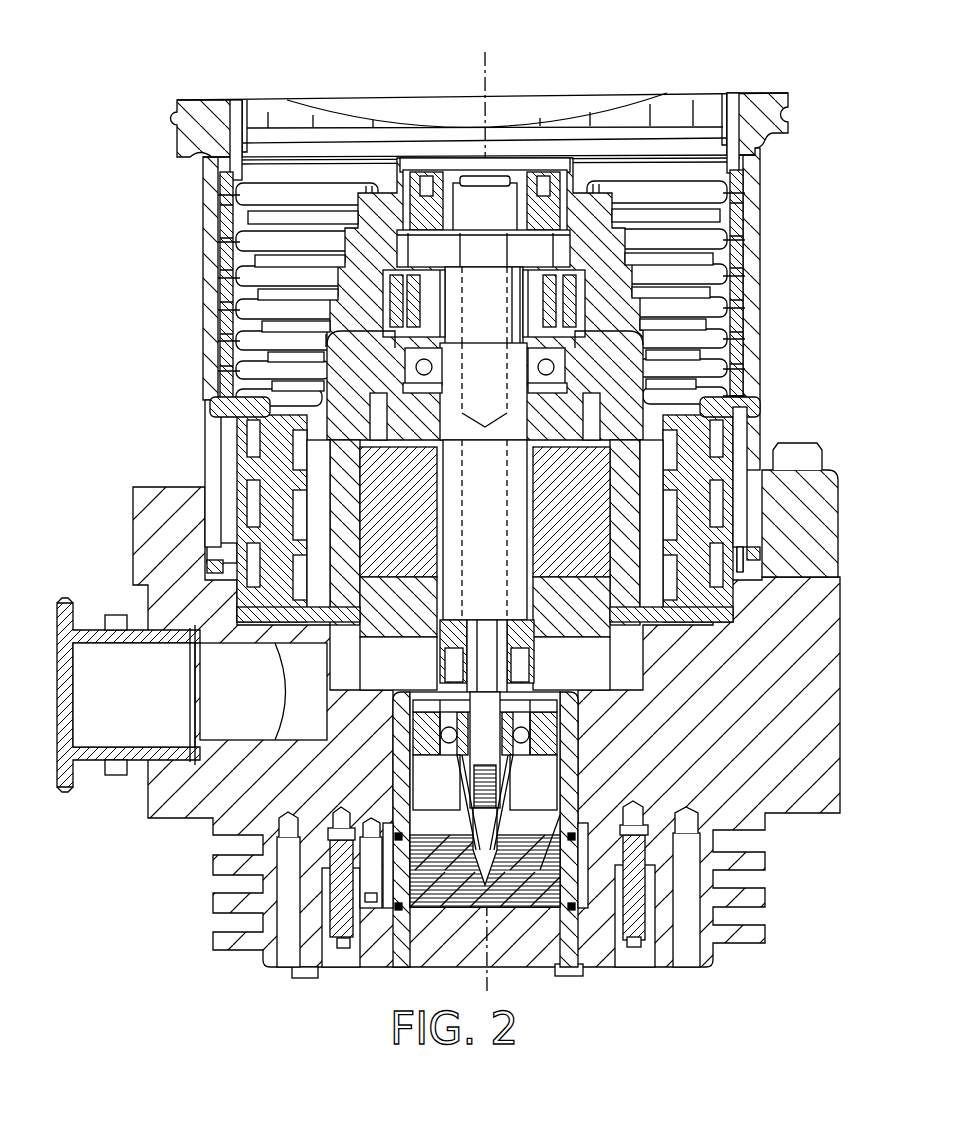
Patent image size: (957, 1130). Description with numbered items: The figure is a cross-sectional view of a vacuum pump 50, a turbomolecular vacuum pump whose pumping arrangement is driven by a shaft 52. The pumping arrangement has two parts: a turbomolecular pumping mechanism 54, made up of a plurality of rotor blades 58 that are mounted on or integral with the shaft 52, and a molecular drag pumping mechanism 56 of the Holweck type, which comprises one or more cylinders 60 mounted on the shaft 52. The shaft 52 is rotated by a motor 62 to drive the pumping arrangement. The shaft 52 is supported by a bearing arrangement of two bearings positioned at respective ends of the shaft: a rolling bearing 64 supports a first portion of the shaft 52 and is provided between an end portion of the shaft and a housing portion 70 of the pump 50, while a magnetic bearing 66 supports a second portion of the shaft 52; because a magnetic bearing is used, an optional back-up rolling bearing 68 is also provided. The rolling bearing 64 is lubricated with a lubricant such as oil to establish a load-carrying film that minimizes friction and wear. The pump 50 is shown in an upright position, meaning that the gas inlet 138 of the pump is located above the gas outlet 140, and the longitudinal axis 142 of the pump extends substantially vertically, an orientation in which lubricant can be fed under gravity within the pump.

The vacuum pump 50 is at (850, 550).
The shaft 52 is at (500, 667).
The turbomolecular pumping mechanism 54 is at (780, 233).
The molecular drag pumping mechanism 56 is at (830, 448).
The rotor blades 58 is at (248, 222).
The cylinders 60 is at (698, 432).
The motor 62 is at (358, 478).
The rolling bearing 64 is at (434, 700).
The magnetic bearing 66 is at (438, 298).
The back-up rolling bearing 68 is at (396, 358).
The housing portion 70 is at (836, 772).
The gas inlet 138 is at (600, 97).
The gas outlet 140 is at (80, 725).
The longitudinal axis 142 is at (485, 54).